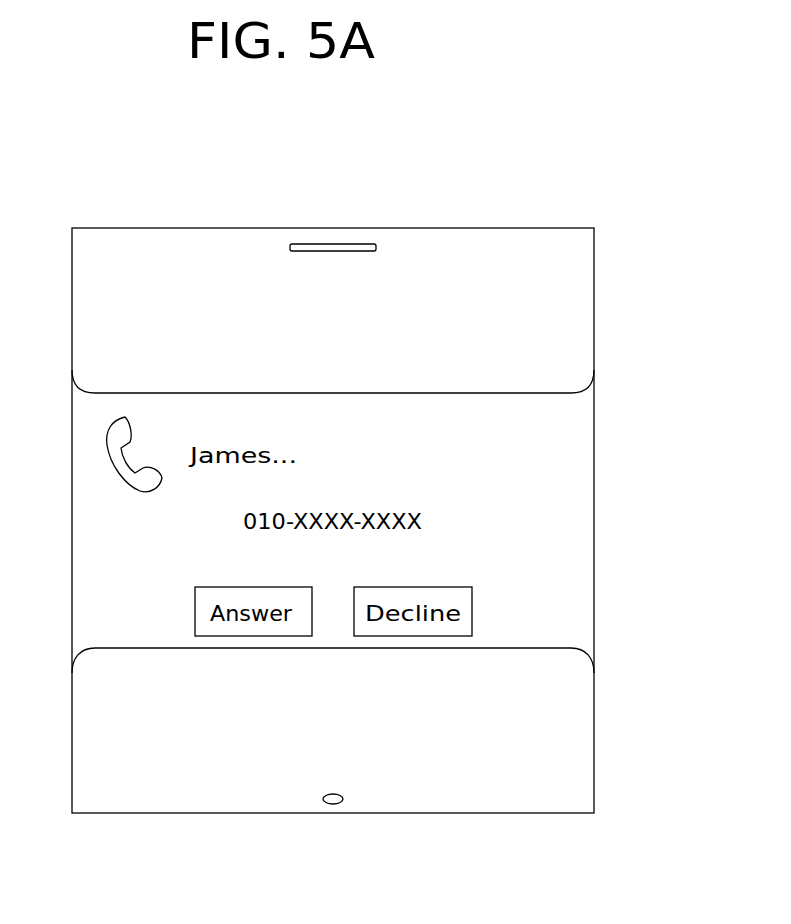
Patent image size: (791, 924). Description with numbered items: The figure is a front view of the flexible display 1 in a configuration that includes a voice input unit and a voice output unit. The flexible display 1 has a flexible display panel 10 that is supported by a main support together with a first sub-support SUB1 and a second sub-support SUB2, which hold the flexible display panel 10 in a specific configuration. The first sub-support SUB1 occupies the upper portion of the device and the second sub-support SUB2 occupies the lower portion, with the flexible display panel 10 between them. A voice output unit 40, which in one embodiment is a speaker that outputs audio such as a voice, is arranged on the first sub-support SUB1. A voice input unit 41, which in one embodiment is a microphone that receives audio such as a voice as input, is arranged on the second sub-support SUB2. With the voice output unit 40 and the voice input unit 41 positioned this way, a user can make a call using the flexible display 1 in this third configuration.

The flexible display 1 is at (583, 212).
The flexible display panel 10 is at (576, 529).
The voice output unit 40 is at (333, 247).
The voice input unit 41 is at (333, 806).
The first sub-support SUB1 is at (585, 314).
The second sub-support SUB2 is at (585, 729).